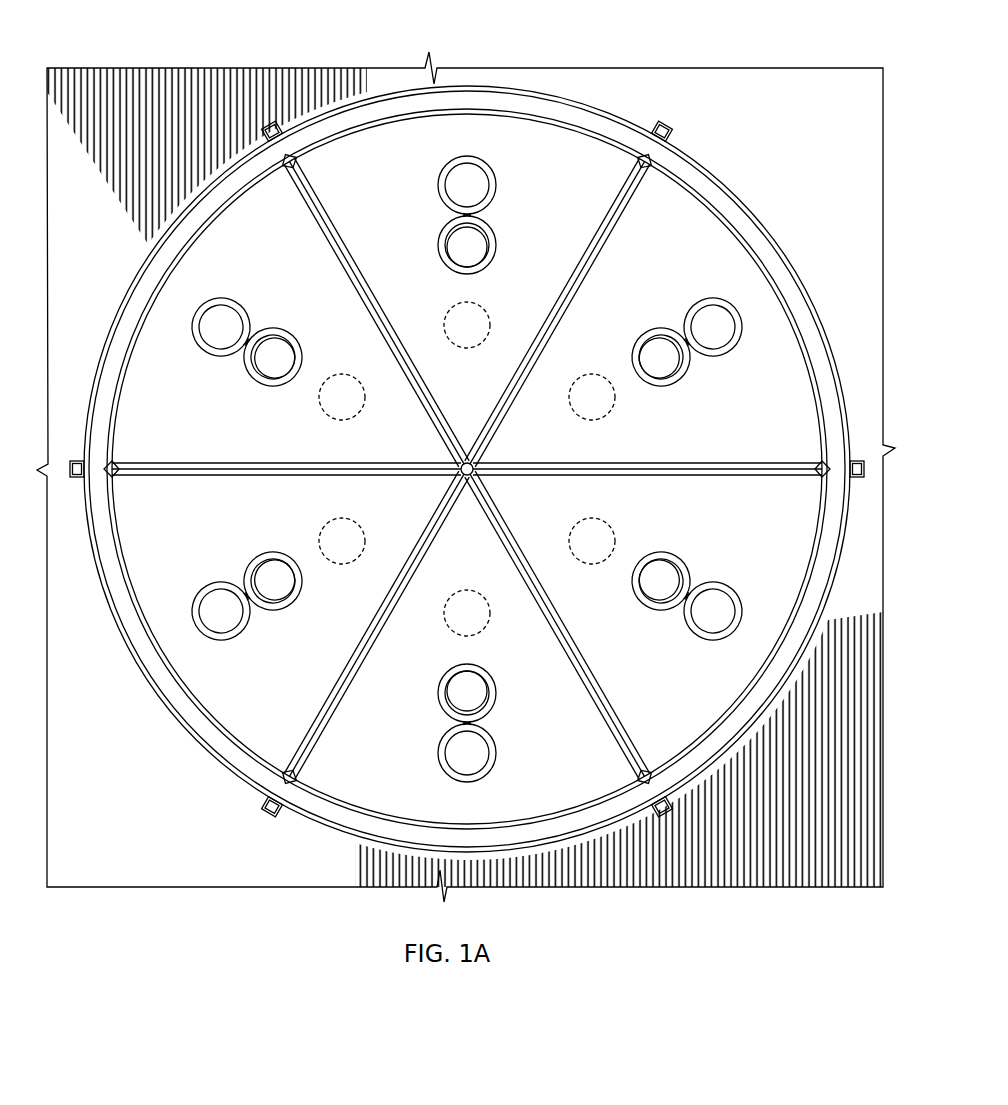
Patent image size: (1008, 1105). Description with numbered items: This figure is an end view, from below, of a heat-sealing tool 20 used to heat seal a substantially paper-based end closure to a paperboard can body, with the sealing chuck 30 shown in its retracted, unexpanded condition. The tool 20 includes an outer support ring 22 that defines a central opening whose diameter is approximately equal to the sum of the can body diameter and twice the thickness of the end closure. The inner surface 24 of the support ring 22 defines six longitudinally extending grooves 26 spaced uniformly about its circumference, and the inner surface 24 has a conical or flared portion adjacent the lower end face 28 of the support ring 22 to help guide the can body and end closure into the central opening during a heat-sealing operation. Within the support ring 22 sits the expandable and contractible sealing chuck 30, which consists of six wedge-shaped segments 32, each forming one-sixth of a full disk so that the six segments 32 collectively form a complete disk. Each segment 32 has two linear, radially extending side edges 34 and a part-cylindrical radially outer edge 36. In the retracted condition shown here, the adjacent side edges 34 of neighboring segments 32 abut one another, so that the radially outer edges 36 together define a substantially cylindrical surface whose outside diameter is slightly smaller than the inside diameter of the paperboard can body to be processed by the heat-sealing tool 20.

The heat-sealing tool 20 is at (180, 912).
The outer support ring 22 is at (783, 850).
The inner surface 24 is at (731, 189).
The longitudinally extending grooves 26 is at (660, 128).
The lower end face 28 is at (131, 829).
The sealing chuck 30 is at (785, 268).
The wedge-shaped segments 32 is at (530, 132).
The side edges 34 is at (388, 320).
The radially outer edge 36 is at (586, 118).